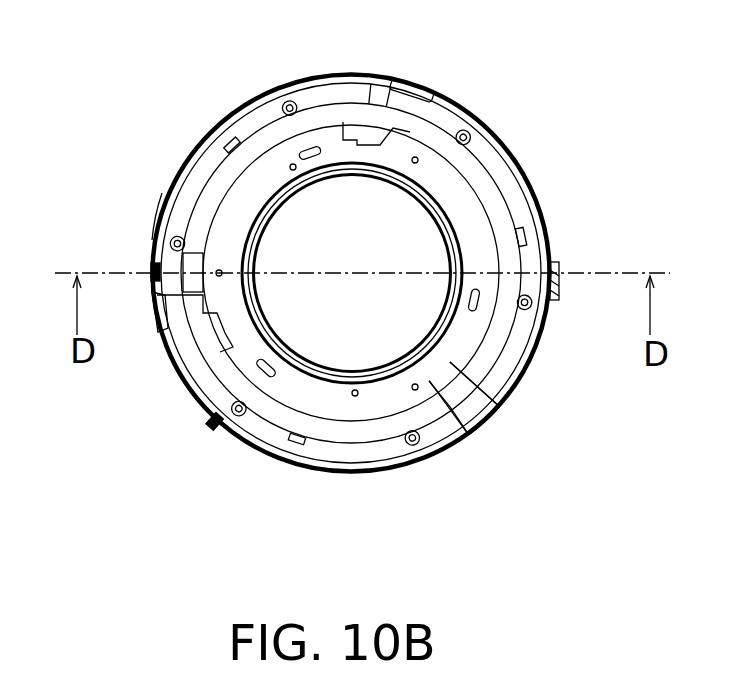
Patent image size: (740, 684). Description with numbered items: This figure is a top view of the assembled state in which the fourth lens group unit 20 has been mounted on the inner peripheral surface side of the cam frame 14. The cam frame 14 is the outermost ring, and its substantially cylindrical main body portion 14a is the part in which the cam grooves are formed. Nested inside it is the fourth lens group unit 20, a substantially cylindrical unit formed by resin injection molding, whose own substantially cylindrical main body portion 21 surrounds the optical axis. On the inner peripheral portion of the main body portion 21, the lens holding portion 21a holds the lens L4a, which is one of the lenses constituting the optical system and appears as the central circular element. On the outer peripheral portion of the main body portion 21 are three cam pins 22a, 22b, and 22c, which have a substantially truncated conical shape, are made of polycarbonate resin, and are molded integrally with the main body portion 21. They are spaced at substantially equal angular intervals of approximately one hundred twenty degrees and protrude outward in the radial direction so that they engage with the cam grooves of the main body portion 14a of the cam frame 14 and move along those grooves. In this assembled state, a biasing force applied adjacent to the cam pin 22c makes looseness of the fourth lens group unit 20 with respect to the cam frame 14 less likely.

The cam frame 14 is at (187, 150).
The main body portion 14a is at (165, 195).
The fourth lens group unit 20 is at (262, 118).
The main body portion 21 is at (462, 222).
The lens holding portion 21a is at (455, 206).
The cam pin 22a is at (440, 103).
The cam pin 22b is at (452, 428).
The cam pin 22c is at (150, 268).
The lens L4a is at (367, 215).